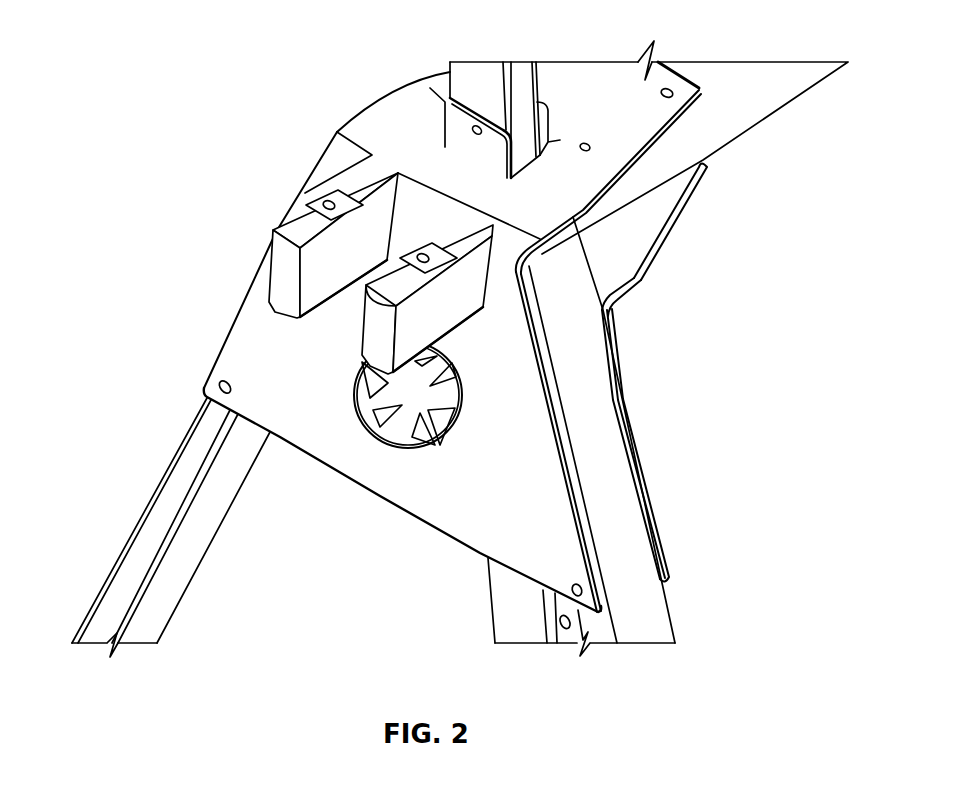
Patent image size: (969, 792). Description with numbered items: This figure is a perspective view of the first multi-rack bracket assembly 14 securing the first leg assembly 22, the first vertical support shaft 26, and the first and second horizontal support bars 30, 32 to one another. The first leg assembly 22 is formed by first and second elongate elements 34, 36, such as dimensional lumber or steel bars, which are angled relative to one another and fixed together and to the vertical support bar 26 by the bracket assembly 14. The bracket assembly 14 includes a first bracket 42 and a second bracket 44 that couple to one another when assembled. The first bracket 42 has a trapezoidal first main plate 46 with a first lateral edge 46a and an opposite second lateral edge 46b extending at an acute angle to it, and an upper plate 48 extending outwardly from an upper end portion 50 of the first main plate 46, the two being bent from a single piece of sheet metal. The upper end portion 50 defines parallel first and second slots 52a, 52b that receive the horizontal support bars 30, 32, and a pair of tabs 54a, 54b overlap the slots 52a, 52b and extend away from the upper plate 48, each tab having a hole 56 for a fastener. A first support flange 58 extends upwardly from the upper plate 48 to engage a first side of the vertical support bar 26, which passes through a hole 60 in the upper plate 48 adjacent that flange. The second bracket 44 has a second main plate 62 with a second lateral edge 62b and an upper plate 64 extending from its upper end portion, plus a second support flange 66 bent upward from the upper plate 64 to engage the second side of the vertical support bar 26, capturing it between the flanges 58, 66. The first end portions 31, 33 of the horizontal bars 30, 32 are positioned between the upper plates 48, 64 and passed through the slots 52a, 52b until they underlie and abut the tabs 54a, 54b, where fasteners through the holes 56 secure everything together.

The first multi-rack bracket assembly 14 is at (283, 83).
The first leg assembly 22 is at (130, 432).
The first vertical support shaft 26 is at (493, 72).
The first horizontal support bar 30 is at (763, 95).
The first end portion of first horizontal support bar 31 is at (463, 403).
The second horizontal support bar 32 is at (661, 60).
The first end portion of second horizontal support bar 33 is at (397, 307).
The first elongate element 34 is at (653, 628).
The second elongate element 36 is at (130, 580).
The first bracket 42 is at (325, 148).
The second bracket 44 is at (639, 309).
The first main plate 46 is at (243, 353).
The first lateral edge 46a is at (257, 293).
The second lateral edge 46b is at (553, 388).
The upper plate 48 is at (404, 125).
The upper end portion 50 is at (512, 287).
The first slot 52a is at (383, 262).
The second slot 52b is at (480, 316).
The first tab 54a is at (362, 182).
The second tab 54b is at (462, 213).
The hole 56 is at (318, 202).
The first support flange 58 is at (447, 100).
The hole 60 is at (547, 160).
The second main plate 62 is at (660, 519).
The second lateral edge 62b is at (642, 463).
The upper plate 64 is at (707, 162).
The second support flange 66 is at (549, 130).